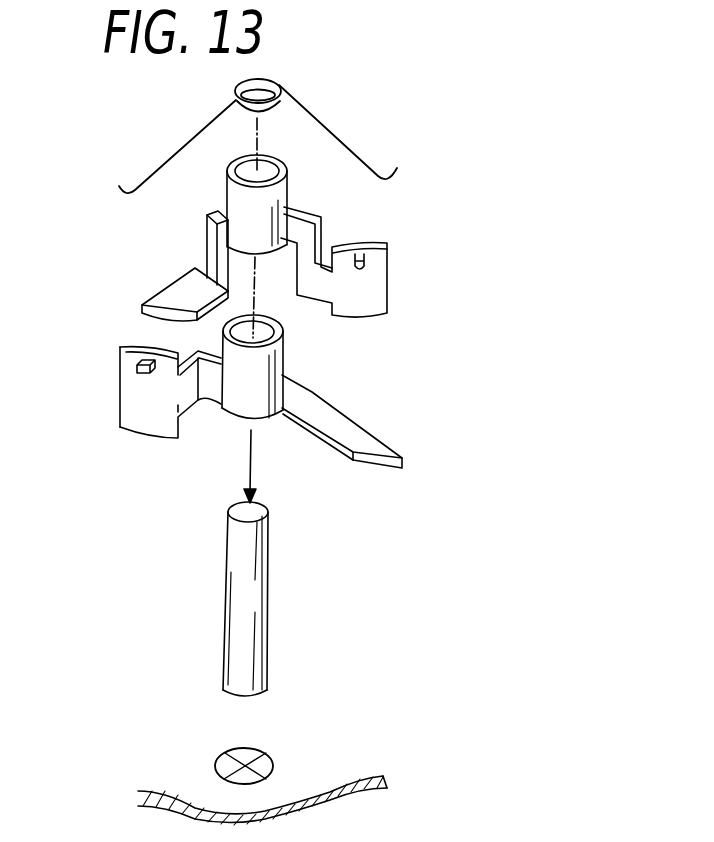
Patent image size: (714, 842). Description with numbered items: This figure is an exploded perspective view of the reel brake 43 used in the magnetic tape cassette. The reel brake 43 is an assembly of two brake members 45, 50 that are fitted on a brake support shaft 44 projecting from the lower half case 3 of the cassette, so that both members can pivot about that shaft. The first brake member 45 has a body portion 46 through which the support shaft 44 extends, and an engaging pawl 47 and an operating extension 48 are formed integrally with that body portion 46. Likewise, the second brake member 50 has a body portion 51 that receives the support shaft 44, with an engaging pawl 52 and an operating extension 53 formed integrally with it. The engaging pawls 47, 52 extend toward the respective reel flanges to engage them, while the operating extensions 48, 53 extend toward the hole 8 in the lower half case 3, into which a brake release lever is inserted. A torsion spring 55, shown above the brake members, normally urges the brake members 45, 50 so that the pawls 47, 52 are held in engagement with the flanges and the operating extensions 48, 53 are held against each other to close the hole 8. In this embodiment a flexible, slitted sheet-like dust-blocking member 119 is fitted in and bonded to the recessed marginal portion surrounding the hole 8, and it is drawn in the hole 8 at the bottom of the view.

The lower half case 3 is at (183, 777).
The hole 8 is at (258, 748).
The dust-blocking member 119 is at (243, 758).
The reel brake 43 is at (193, 128).
The brake support shaft 44 is at (260, 565).
The brake member 45 is at (292, 357).
The body portion 46 is at (237, 410).
The engaging pawl 47 is at (133, 383).
The operating extension 48 is at (360, 435).
The brake member 50 is at (220, 190).
The body portion 51 is at (270, 195).
The engaging pawl 52 is at (372, 272).
The operating extension 53 is at (187, 287).
The torsion spring 55 is at (358, 157).